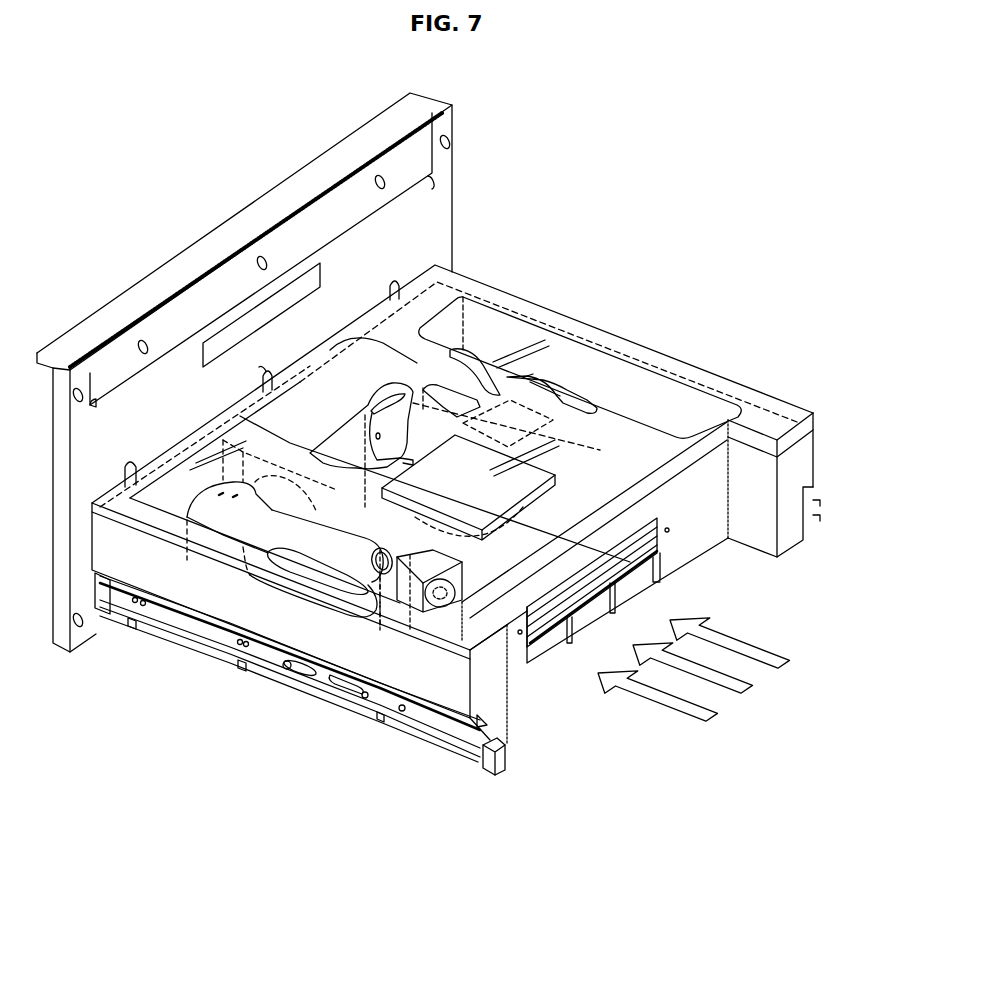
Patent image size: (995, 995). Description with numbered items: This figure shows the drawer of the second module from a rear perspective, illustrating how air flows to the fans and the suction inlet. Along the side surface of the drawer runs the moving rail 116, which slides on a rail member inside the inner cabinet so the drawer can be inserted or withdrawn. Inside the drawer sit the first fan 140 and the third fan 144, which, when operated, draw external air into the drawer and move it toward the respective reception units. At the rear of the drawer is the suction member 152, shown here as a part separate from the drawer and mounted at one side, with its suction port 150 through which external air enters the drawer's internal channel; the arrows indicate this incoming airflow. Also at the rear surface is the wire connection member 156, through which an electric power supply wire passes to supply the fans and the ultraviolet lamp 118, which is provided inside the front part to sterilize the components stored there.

The ultraviolet lamp 118 is at (318, 278).
The moving rail 116 is at (380, 703).
The first fan 140 is at (493, 495).
The third fan 144 is at (457, 565).
The suction port 150 is at (663, 540).
The suction member 152 is at (667, 568).
The wire connection member 156 is at (503, 755).